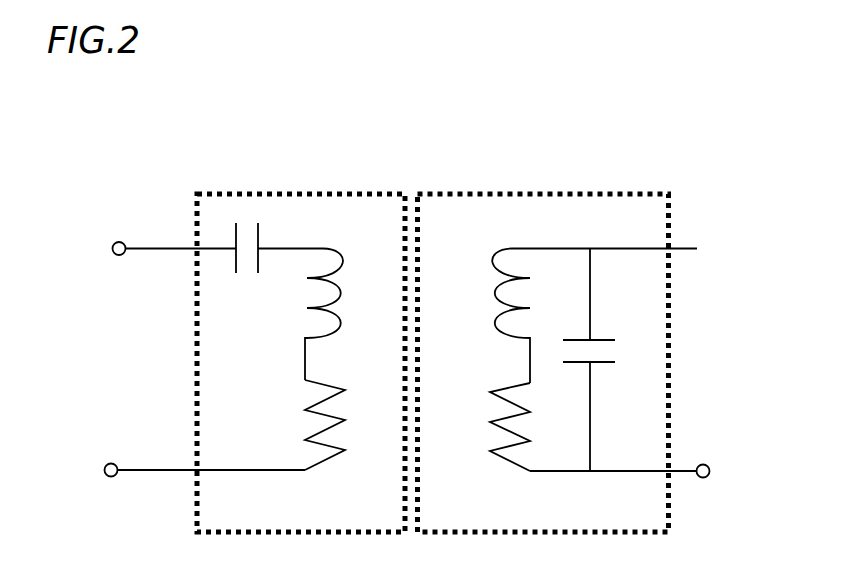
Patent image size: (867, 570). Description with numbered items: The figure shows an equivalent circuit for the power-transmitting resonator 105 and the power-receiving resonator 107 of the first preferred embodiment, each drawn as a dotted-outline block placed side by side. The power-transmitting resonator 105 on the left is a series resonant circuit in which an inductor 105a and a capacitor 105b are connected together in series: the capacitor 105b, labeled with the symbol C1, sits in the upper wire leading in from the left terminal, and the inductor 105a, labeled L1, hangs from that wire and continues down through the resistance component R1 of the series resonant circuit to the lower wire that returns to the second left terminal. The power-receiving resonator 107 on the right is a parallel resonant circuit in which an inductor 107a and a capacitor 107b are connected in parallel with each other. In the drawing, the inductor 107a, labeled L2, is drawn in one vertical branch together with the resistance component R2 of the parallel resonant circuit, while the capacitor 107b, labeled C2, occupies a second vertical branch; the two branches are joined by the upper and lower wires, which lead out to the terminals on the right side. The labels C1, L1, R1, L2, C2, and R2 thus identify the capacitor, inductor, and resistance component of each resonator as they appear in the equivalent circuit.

The power-transmitting resonator 105 is at (298, 192).
The inductor 105a is at (349, 289).
The capacitor 105b is at (211, 215).
The power-receiving resonator 107 is at (523, 192).
The inductor 107a is at (478, 293).
The capacitor 107b is at (663, 360).
The capacitor C1 is at (246, 270).
The inductor L1 is at (367, 233).
The resistance component R1 is at (349, 425).
The inductor L2 is at (480, 235).
The capacitor C2 is at (611, 360).
The resistance component R2 is at (486, 427).